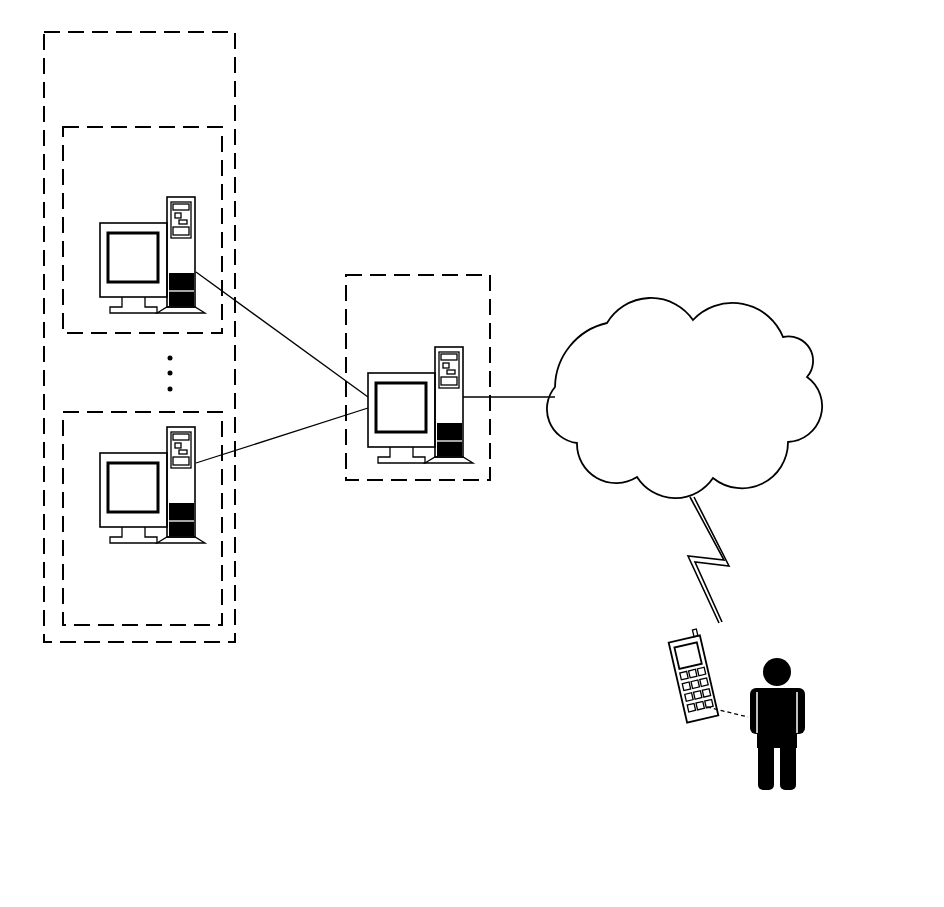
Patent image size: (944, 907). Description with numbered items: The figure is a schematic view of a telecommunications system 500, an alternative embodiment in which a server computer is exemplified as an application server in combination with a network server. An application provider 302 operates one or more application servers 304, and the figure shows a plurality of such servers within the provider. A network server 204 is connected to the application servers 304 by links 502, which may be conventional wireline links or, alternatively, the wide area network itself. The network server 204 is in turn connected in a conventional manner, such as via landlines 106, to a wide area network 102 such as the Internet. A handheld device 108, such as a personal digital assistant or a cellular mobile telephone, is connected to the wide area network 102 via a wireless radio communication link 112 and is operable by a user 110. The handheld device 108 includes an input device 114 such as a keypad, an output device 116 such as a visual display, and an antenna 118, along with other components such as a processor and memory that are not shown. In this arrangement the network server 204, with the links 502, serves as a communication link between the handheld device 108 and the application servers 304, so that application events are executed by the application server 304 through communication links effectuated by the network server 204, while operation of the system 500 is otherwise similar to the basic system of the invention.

The telecommunications system 500 is at (545, 104).
The application provider 302 is at (150, 31).
The application server 304 is at (150, 126).
The links 502 is at (297, 346).
The network server 204 is at (420, 274).
The landlines 106 is at (503, 397).
The wide area network 102 is at (641, 297).
The wireless radio communication link 112 is at (716, 546).
The handheld device 108 is at (672, 691).
The output device 116 is at (672, 636).
The input device 114 is at (665, 701).
The antenna 118 is at (735, 615).
The user 110 is at (803, 724).